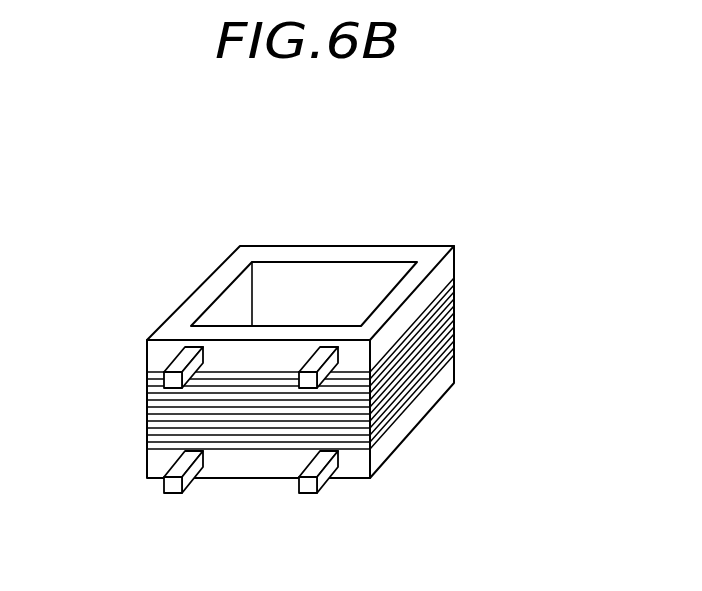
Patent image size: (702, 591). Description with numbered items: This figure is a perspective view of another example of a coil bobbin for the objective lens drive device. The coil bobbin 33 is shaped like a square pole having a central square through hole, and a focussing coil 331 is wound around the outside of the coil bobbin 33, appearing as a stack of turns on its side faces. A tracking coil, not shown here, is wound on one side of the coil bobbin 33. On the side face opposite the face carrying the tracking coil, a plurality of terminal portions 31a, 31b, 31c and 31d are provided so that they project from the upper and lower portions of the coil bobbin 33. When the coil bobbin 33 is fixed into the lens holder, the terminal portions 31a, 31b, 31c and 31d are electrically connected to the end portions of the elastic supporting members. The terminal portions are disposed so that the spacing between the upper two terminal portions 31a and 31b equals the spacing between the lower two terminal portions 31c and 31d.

The coil bobbin 33 is at (451, 237).
The focussing coil 331 is at (455, 338).
The terminal portion 31a is at (173, 355).
The terminal portion 31b is at (315, 360).
The terminal portion 31c is at (178, 470).
The terminal portion 31d is at (318, 470).